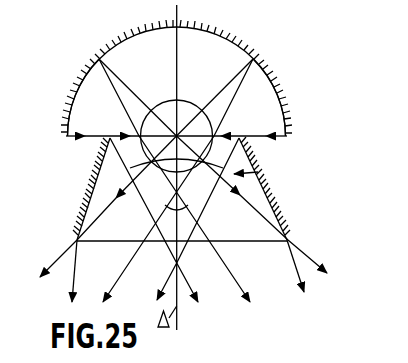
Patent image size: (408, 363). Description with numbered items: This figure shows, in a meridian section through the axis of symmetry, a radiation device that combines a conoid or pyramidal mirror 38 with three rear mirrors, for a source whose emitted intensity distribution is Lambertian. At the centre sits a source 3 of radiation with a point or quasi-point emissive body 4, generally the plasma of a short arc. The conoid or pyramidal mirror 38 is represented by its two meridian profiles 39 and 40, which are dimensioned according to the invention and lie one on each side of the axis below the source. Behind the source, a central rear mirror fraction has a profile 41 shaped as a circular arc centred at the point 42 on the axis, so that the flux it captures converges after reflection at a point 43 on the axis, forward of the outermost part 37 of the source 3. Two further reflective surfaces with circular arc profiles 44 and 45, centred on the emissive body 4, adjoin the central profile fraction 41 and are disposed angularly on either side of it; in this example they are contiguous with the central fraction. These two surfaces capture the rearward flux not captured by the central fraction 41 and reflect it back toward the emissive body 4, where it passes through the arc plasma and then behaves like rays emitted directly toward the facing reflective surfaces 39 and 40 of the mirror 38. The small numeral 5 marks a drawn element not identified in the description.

The source of radiation 3 is at (182, 111).
The emissive body 4 is at (178, 100).
The angle 5 is at (176, 221).
The outermost part of the source 37 is at (176, 180).
The conoid or pyramidal mirror 38 is at (262, 170).
The profile of the conoid or pyramidal mirror 39 is at (273, 200).
The profile of the conoid or pyramidal mirror 40 is at (88, 176).
The rear mirror fraction profile 41 is at (212, 30).
The centre point of the circular arc profile 42 is at (138, 173).
The convergence point 43 is at (176, 190).
The reflective surface with circular arc profile 44 is at (71, 86).
The reflective surface with circular arc profile 45 is at (291, 92).